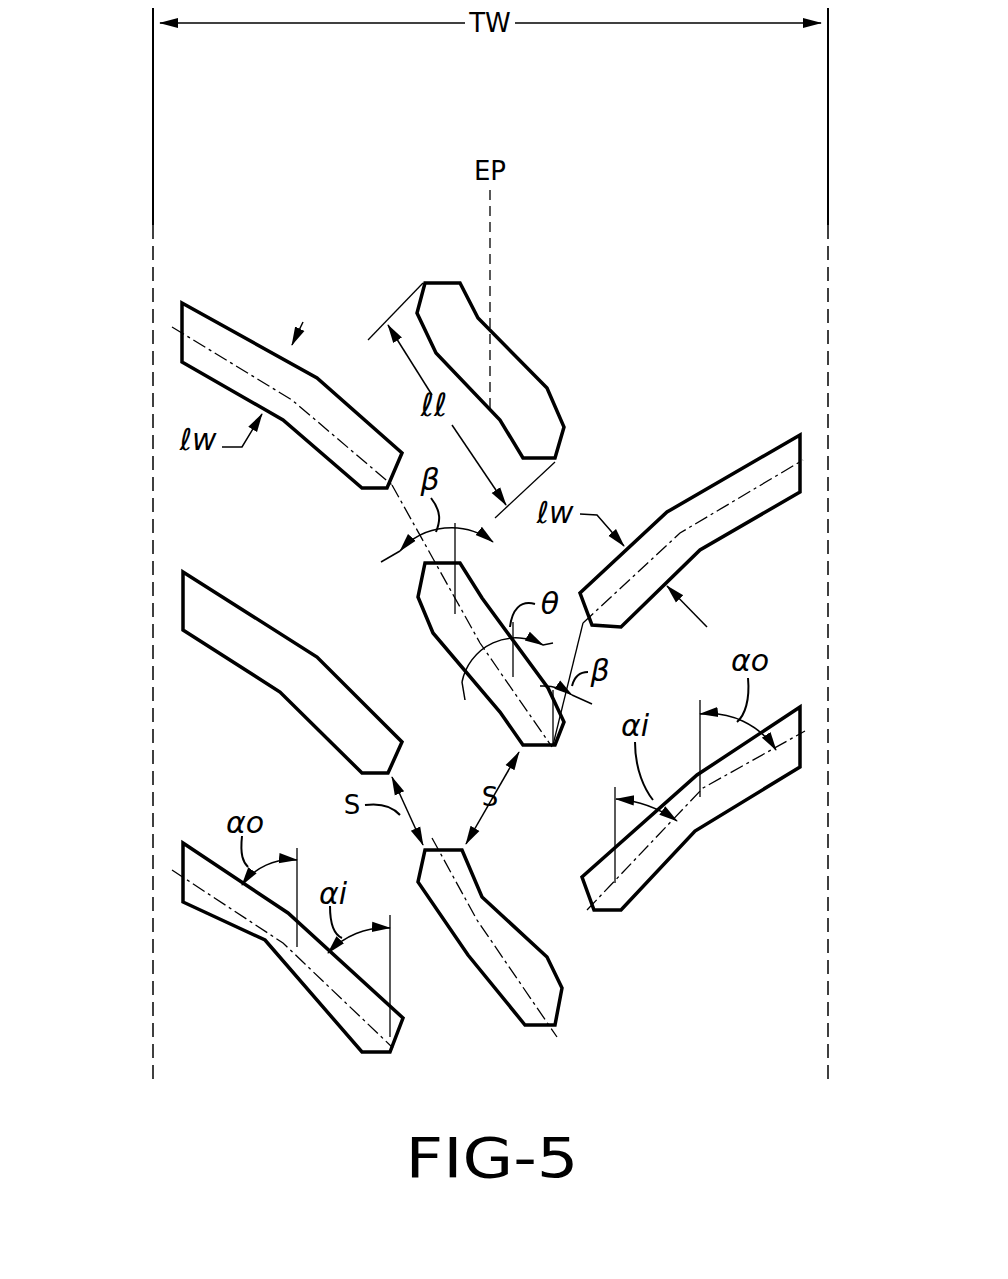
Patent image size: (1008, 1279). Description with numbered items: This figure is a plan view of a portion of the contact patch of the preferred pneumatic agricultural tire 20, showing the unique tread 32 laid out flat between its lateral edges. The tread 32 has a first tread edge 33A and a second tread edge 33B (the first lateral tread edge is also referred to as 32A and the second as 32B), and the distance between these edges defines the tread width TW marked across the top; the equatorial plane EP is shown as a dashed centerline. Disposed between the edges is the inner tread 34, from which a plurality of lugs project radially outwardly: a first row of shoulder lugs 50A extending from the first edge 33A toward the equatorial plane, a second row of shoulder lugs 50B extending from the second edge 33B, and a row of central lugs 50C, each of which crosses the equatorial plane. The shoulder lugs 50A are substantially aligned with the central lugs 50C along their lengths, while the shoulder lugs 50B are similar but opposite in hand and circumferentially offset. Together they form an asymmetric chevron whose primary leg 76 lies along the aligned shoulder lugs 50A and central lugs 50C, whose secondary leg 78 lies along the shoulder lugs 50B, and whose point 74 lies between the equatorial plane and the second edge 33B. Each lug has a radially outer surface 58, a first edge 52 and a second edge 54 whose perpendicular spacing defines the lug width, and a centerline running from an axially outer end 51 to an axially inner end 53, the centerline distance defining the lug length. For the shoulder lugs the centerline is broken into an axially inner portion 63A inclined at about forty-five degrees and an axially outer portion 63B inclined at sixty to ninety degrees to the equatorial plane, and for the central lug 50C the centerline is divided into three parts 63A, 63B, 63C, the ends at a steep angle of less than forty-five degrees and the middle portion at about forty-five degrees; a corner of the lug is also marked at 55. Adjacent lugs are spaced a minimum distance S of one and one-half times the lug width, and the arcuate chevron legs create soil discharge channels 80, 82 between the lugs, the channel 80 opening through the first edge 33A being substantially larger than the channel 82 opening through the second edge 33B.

The pneumatic agricultural tire 20 is at (125, 125).
The tread 32 is at (750, 387).
The first lateral tread edge 32A is at (360, 268).
The second tread half 32B is at (597, 268).
The first tread edge 33A is at (153, 192).
The second tread edge 33B is at (828, 192).
The inner tread 34 is at (780, 647).
The first row shoulder lugs 50A is at (190, 358).
The second row shoulder lugs 50B is at (783, 485).
The central lugs 50C is at (518, 343).
The axially outer end 51 is at (373, 490).
The first edge 52 is at (727, 817).
The axially inner end 53 is at (195, 312).
The second edge 54 is at (472, 874).
The block corner 55 is at (445, 924).
The radially outer surface 58 is at (230, 380).
The axially inner portion of centerline 63A is at (540, 982).
The axially outer portion of centerline 63B is at (490, 930).
The centerline portion of central lug 63C is at (462, 875).
The point of the chevron 74 is at (553, 748).
The primary leg 76 is at (398, 538).
The secondary leg 78 is at (585, 628).
The soil discharge channel 80 is at (215, 528).
The soil discharge channel 82 is at (733, 620).